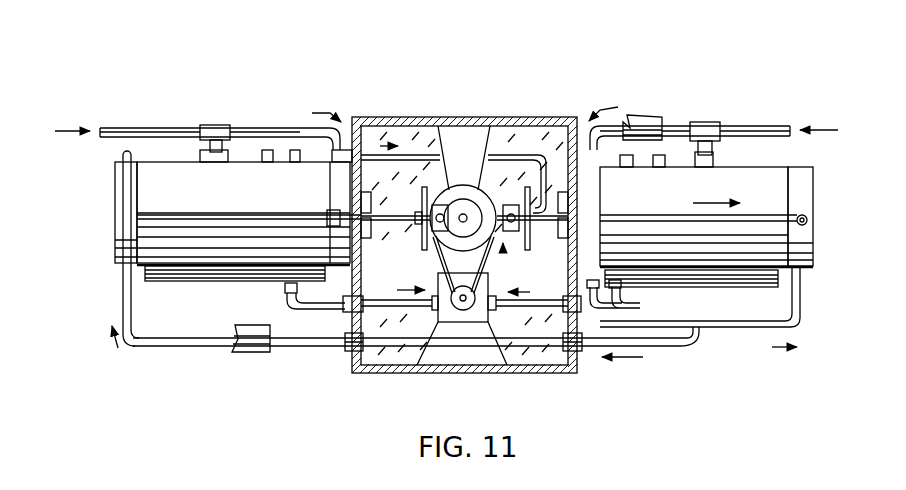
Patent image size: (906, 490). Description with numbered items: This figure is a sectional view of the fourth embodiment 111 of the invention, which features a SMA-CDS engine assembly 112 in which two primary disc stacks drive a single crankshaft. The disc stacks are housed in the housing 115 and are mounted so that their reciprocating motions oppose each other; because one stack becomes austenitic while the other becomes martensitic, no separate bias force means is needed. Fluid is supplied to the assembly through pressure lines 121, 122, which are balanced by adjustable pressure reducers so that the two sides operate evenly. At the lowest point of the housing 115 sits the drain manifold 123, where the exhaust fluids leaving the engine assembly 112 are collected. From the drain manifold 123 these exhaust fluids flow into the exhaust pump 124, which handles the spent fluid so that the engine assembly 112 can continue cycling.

The fourth embodiment 111 is at (306, 73).
The SMA-CDS engine assembly 112 is at (449, 98).
The housing 115 is at (113, 221).
The pressure line 121 is at (165, 126).
The pressure line 122 is at (753, 124).
The drain manifold 123 is at (243, 283).
The exhaust pump 124 is at (440, 278).